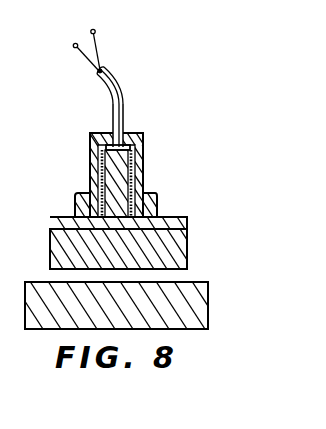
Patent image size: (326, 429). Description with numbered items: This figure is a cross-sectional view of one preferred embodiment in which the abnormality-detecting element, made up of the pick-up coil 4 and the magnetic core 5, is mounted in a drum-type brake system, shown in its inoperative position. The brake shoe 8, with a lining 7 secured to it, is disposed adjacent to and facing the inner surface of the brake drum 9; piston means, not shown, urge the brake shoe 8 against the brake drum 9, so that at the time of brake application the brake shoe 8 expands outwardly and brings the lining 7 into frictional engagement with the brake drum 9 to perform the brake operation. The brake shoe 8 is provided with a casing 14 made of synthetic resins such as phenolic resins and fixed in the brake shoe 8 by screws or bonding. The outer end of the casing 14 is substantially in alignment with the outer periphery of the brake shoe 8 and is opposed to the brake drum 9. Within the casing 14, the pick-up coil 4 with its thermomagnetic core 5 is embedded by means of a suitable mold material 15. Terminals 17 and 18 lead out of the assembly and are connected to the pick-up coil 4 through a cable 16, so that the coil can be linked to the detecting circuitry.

The pick-up coil 4 is at (90, 154).
The magnetic core 5 is at (112, 184).
The lining 7 is at (187, 248).
The brake shoe 8 is at (178, 216).
The brake drum 9 is at (208, 305).
The casing 14 is at (140, 152).
The mold material 15 is at (128, 132).
The cable 16 is at (117, 80).
The terminal 17 is at (72, 46).
The terminal 18 is at (95, 29).